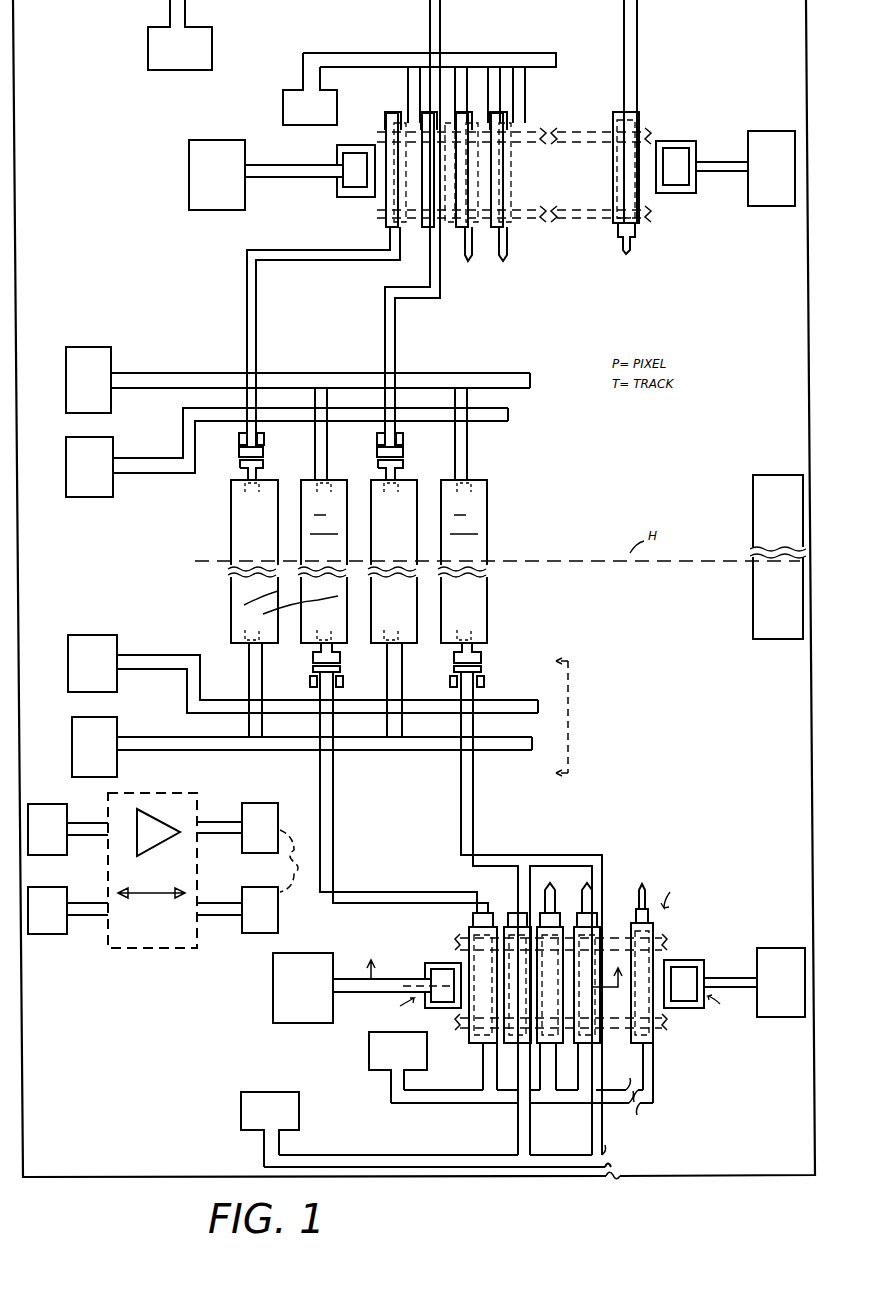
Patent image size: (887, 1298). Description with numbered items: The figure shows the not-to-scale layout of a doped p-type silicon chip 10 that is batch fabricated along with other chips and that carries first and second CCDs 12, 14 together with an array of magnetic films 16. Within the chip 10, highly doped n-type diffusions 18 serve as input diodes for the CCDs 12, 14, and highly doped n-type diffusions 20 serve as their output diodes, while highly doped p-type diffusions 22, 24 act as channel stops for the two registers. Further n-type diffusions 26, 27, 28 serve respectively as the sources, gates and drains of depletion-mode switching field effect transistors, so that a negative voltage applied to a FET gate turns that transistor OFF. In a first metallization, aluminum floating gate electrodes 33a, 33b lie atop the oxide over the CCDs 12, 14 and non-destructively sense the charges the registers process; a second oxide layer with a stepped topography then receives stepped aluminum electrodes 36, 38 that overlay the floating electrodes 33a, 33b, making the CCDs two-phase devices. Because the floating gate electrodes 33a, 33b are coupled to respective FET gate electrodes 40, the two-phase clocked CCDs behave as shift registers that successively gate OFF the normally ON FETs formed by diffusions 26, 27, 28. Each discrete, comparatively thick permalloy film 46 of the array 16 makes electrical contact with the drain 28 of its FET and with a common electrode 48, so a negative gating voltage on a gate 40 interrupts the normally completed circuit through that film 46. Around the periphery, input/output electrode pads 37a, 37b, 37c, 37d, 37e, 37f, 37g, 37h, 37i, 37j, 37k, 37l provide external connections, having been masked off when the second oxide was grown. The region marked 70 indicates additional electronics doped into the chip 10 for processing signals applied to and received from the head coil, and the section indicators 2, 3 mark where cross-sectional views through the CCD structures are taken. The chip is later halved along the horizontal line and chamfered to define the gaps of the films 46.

The silicon chip 10 is at (58, 180).
The first CCD 12 is at (497, 998).
The second CCD 14 is at (449, 223).
The array of magnetic films 16 is at (495, 562).
The n-type diffusions serving as input diodes 18 is at (335, 190).
The n-type diffusions serving as output diodes 20 is at (686, 193).
The p-type diffusion channel stop 22 is at (664, 933).
The p-type diffusion channel stop 24 is at (532, 132).
The source diffusion 26 is at (264, 438).
The gate diffusion 27 is at (232, 454).
The drain diffusion 28 is at (272, 468).
The floating gate electrode 33a is at (466, 931).
The floating gate electrode 33b is at (386, 180).
The stepped metallic electrode 36 is at (543, 1044).
The input/output electrode pad 37a is at (148, 48).
The input/output electrode pad 37b is at (283, 109).
The input/output electrode pad 37c is at (189, 173).
The input/output electrode pad 37d is at (90, 345).
The input/output electrode pad 37e is at (115, 454).
The input/output electrode pad 37f is at (108, 635).
The input/output electrode pad 37g is at (118, 728).
The input/output electrode pad 37h is at (272, 985).
The input/output electrode pad 37i is at (276, 1092).
The input/output electrode pad 37j is at (369, 1060).
The input/output electrode pad 37k is at (770, 1017).
The input/output electrode pad 37l is at (752, 131).
The stepped metallic electrode 38 is at (388, 112).
The FET gate electrode 40 is at (266, 452).
The magnetic film 46 is at (263, 614).
The common electrode 48 is at (325, 431).
The signal processing electronics 70 is at (177, 795).
The section line 2 is at (493, 967).
The section line 3 is at (553, 715).